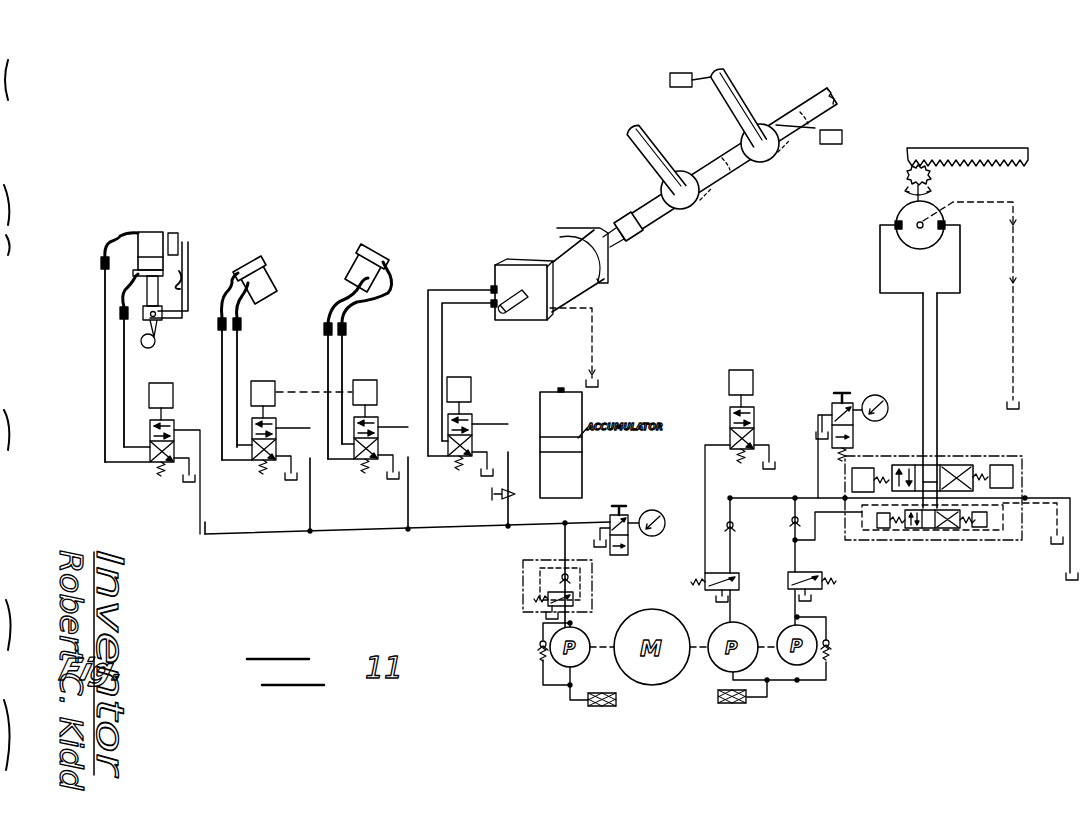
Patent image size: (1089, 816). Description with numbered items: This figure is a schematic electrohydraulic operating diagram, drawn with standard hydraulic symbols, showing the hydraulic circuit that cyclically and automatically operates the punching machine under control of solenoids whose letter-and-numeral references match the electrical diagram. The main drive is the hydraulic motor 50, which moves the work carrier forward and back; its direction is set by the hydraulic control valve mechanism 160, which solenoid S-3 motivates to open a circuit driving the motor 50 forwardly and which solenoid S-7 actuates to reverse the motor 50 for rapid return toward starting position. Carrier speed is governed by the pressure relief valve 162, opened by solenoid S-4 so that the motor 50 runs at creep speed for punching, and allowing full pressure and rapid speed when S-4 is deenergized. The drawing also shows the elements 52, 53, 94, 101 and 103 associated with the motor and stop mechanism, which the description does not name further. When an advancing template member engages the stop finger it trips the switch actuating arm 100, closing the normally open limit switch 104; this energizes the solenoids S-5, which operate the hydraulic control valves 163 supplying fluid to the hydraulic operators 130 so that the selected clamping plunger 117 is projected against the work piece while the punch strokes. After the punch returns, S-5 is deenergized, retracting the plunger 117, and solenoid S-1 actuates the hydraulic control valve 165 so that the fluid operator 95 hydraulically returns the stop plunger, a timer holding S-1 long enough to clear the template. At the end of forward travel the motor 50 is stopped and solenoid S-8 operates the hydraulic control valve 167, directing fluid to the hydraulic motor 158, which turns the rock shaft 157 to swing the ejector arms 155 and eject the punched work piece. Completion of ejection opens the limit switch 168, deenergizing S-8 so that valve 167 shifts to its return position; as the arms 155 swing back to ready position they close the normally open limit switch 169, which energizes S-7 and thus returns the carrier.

The hydraulic motor 50 is at (896, 235).
The pinion gear 52 is at (906, 184).
The rack 53 is at (975, 148).
The hydraulic lines 94 is at (145, 286).
The fluid operator 95 is at (154, 240).
The switch actuating arm 100 is at (191, 280).
The roller 101 is at (156, 333).
The bracket 103 is at (177, 252).
The limit switch 104 is at (190, 258).
The clamping plunger 117 is at (366, 281).
The hydraulic operators 130 is at (380, 256).
The ejector arms 155 is at (712, 163).
The rock shaft 157 is at (648, 224).
The hydraulic motor 158 is at (599, 276).
The hydraulic control valve mechanism 160 is at (936, 533).
The pressure relief valve 162 is at (756, 422).
The hydraulic control valves 163 is at (276, 430).
The hydraulic control valve 165 is at (174, 431).
The hydraulic control valve 167 is at (472, 427).
The limit switch 168 is at (690, 73).
The limit switch 169 is at (840, 128).
The solenoid S-1 is at (172, 392).
The solenoid S-3 is at (980, 530).
The solenoid S-4 is at (754, 384).
The solenoids S-5 is at (274, 390).
The solenoid S-7 is at (885, 530).
The solenoid S-8 is at (470, 390).